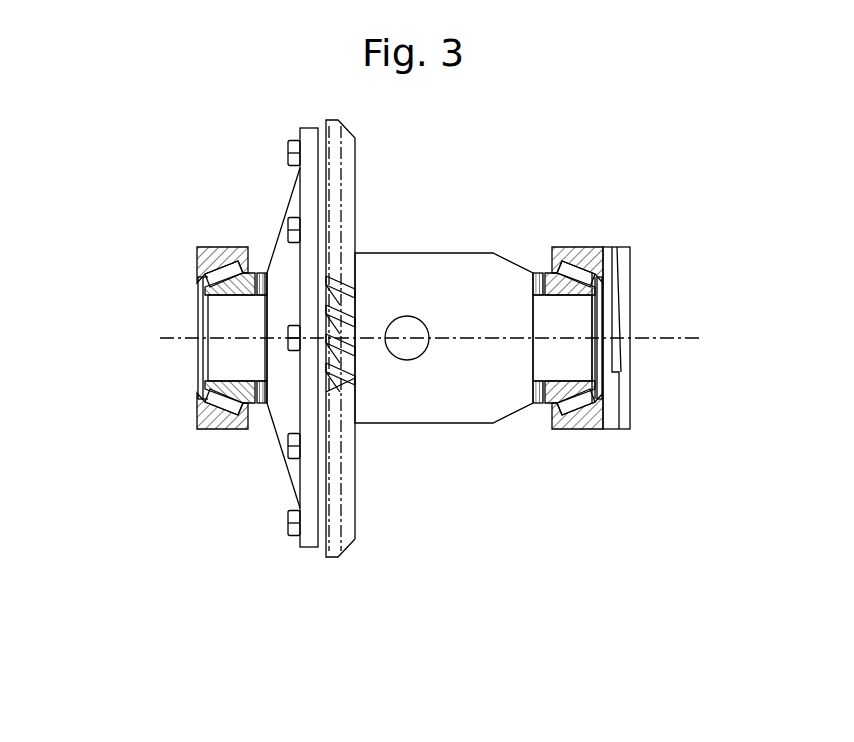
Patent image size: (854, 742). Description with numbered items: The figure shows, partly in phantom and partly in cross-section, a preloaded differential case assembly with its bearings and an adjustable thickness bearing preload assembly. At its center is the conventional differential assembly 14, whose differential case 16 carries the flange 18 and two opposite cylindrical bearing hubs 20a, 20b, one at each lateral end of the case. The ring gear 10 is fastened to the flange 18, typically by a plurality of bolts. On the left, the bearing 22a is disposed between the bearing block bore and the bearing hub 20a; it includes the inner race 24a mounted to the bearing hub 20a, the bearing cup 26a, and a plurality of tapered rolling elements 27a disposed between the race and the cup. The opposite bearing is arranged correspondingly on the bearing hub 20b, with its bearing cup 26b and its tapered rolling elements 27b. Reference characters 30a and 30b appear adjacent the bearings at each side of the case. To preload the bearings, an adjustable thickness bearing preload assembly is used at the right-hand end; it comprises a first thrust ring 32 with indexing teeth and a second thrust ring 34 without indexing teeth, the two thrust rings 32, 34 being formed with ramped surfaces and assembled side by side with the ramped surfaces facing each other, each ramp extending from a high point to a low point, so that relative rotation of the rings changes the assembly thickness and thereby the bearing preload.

The ring gear 10 is at (355, 532).
The differential assembly 14 is at (434, 229).
The differential case 16 is at (492, 309).
The flange 18 is at (305, 544).
The bearing hub 20a is at (222, 321).
The bearing hub 20b is at (580, 323).
The bearing 22a is at (178, 390).
The inner race 24a is at (258, 404).
The bearing cup 26a is at (207, 246).
The bearing cup 26b is at (572, 246).
The tapered rolling elements 27a is at (212, 278).
The tapered rolling elements 27b is at (558, 268).
The spacer 30a is at (262, 272).
The spacer 30b is at (536, 404).
The first thrust ring 32 is at (610, 283).
The second thrust ring 34 is at (622, 246).